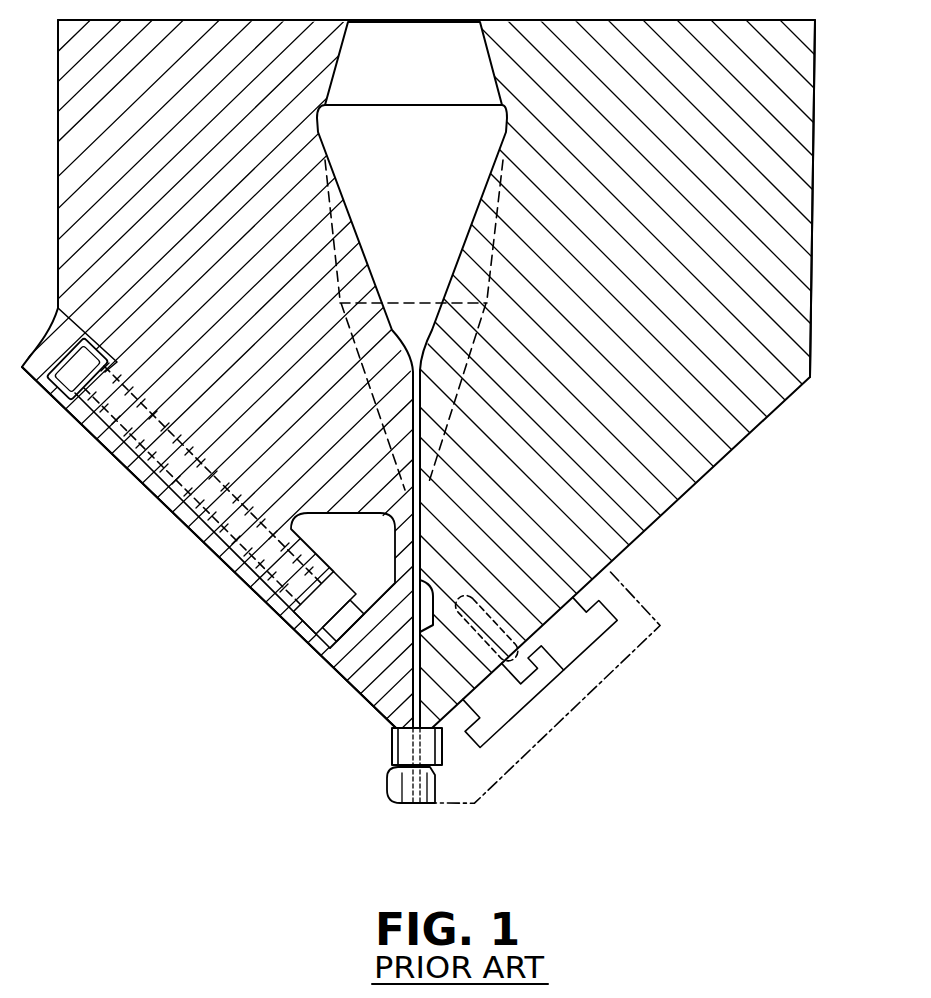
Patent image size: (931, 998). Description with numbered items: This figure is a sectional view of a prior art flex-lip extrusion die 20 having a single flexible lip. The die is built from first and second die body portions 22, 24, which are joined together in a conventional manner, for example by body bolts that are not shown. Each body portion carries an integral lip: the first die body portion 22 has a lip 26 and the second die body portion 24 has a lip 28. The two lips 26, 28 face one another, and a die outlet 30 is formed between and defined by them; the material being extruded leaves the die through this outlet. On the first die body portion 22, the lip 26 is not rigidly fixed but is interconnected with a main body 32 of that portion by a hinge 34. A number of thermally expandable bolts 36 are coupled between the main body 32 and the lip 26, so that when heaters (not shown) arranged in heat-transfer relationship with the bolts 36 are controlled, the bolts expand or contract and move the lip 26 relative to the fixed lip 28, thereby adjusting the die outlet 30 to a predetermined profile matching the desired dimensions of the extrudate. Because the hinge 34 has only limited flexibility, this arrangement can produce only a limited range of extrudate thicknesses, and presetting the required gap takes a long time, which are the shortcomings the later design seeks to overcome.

The extrusion die 20 is at (243, 650).
The first die body portion 22 is at (88, 236).
The second die body portion 24 is at (778, 237).
The lip 26 is at (376, 692).
The lip 28 is at (453, 723).
The die outlet 30 is at (407, 803).
The main body 32 is at (214, 547).
The hinge 34 is at (410, 550).
The thermally expandable bolts 36 is at (70, 388).